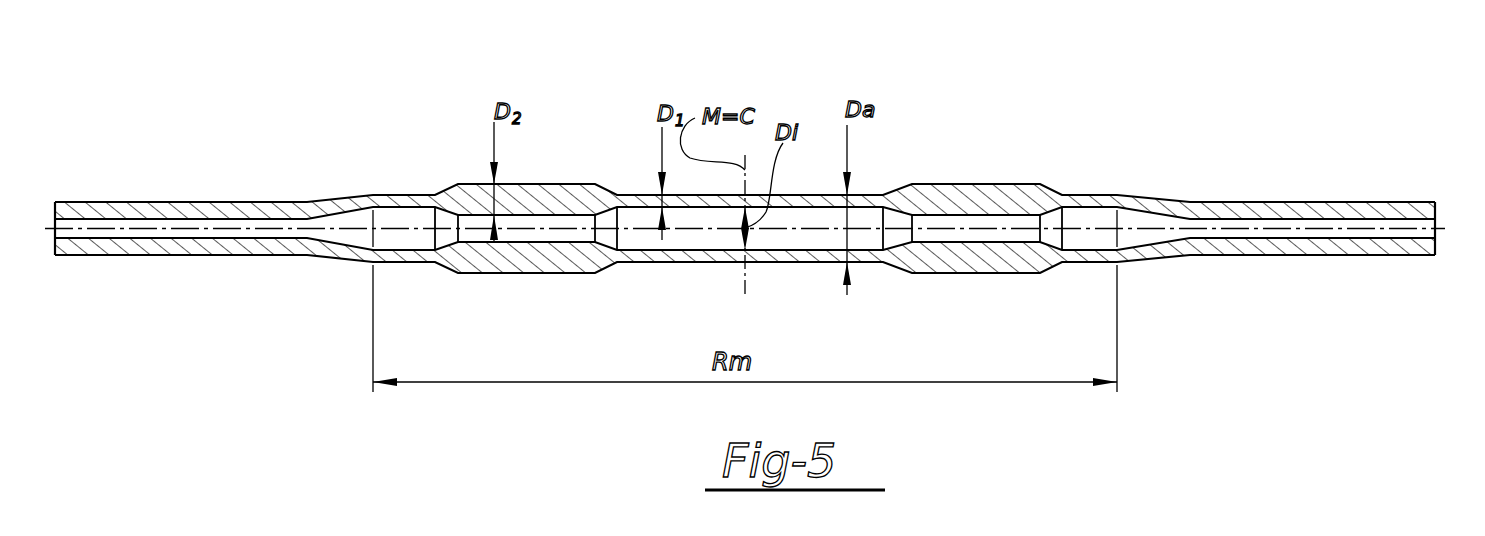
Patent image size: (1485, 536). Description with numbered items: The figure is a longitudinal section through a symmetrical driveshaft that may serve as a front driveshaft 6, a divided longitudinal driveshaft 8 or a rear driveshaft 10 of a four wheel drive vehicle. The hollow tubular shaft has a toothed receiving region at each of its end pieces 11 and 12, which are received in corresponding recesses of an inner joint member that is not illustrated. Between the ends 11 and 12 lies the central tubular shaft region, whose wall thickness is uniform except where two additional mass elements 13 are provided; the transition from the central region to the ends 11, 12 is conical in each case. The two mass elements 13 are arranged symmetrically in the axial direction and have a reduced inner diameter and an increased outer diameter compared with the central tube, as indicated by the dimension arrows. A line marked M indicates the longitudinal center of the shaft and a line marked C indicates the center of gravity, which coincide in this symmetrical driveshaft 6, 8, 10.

The front driveshaft 6 is at (1218, 182).
The divided longitudinal driveshaft 8 is at (745, 181).
The rear driveshaft 10 is at (745, 181).
The end piece 11 is at (190, 213).
The end piece 12 is at (1300, 213).
The additional mass element 13 is at (530, 197).